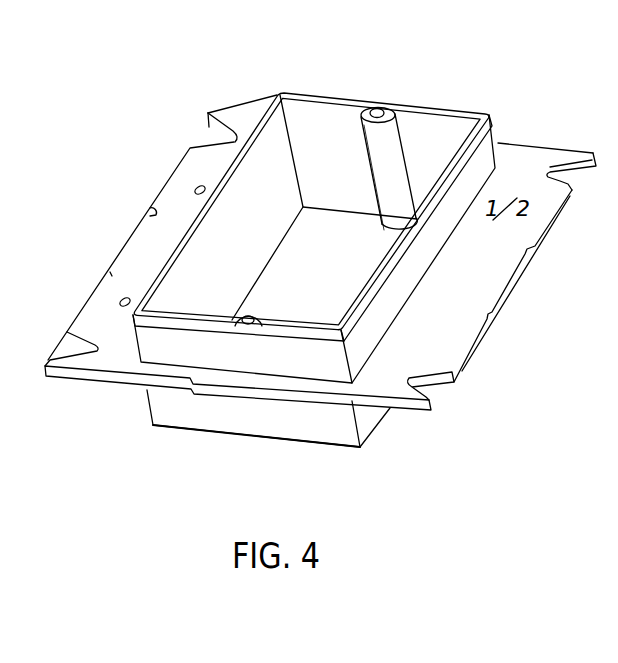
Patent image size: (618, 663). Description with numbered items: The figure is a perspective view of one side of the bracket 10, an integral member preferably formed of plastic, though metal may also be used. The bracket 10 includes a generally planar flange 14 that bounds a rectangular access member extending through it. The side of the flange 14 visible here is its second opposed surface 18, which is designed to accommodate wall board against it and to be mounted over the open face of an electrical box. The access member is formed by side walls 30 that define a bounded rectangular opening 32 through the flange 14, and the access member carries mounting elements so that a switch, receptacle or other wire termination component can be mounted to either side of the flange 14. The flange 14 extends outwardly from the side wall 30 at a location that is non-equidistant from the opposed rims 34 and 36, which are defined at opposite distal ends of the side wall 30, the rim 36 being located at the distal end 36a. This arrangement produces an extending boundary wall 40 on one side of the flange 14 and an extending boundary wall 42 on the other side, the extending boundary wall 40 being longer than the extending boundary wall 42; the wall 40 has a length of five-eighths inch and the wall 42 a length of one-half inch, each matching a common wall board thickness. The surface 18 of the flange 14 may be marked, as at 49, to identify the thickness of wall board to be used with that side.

The bracket 10 is at (398, 61).
The flange 14 is at (472, 307).
The second opposed surface 18 is at (170, 213).
The side walls 30 is at (233, 267).
The bounded rectangular opening 32 is at (335, 245).
The rim 34 is at (308, 443).
The rim 36 is at (282, 92).
The distal end 36a is at (444, 113).
The extending boundary wall 40 is at (155, 350).
The extending boundary wall 42 is at (200, 413).
The marking 49 is at (518, 200).